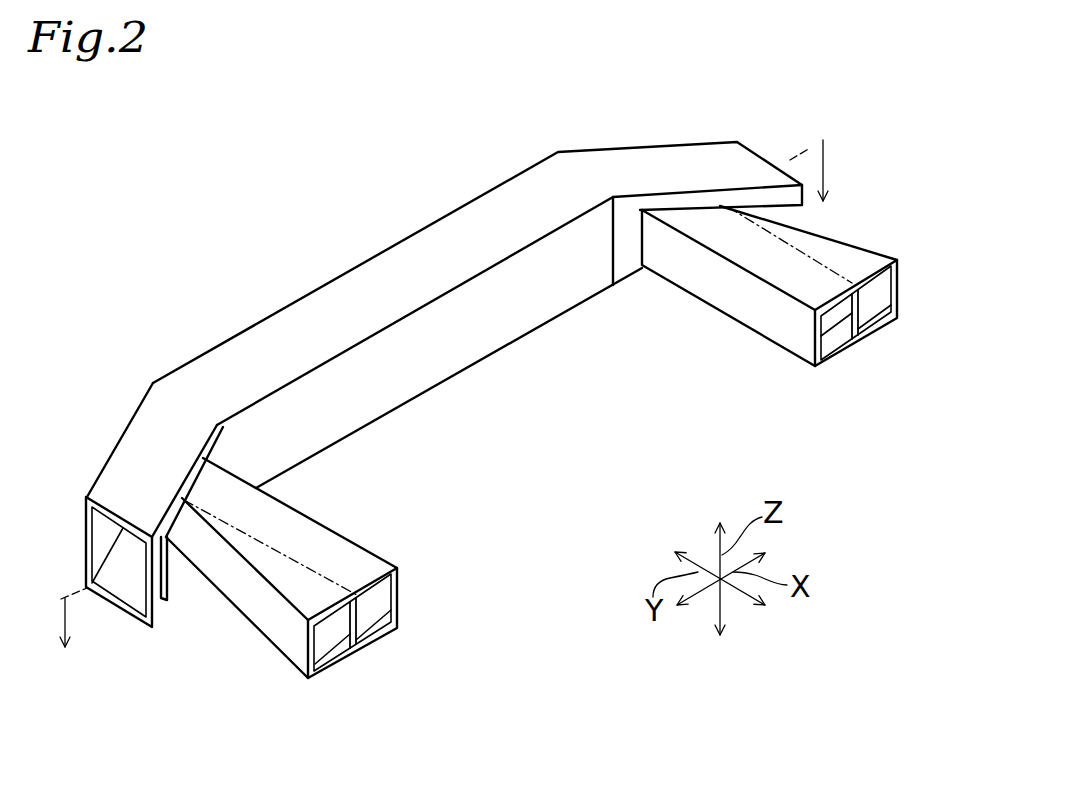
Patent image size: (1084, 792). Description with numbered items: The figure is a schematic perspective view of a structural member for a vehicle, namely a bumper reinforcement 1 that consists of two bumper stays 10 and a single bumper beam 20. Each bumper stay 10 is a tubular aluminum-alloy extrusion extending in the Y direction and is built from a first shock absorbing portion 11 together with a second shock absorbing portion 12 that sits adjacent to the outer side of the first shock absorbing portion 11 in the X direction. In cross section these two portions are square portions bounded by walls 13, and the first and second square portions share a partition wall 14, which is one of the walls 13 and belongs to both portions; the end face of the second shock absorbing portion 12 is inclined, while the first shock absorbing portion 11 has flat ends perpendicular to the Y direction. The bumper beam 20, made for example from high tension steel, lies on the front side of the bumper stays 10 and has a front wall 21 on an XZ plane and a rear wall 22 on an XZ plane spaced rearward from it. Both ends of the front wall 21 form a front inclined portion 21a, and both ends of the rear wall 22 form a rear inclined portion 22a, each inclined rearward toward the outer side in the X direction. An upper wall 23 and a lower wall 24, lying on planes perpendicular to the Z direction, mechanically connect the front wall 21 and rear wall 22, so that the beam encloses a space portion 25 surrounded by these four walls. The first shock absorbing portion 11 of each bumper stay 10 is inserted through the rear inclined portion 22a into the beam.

The bumper reinforcement 1 is at (218, 218).
The bumper stay 10 is at (437, 462).
The first shock absorbing portion 11 is at (323, 531).
The second shock absorbing portion 12 is at (307, 588).
The wall 13 is at (397, 612).
The partition wall 14 is at (368, 644).
The bumper beam 20 is at (423, 256).
The front wall 21 is at (277, 311).
The front inclined portion 21a is at (127, 427).
The rear wall 22 is at (450, 343).
The rear inclined portion 22a is at (166, 600).
The upper wall 23 is at (365, 290).
The lower wall 24 is at (543, 324).
The space portion 25 is at (123, 582).